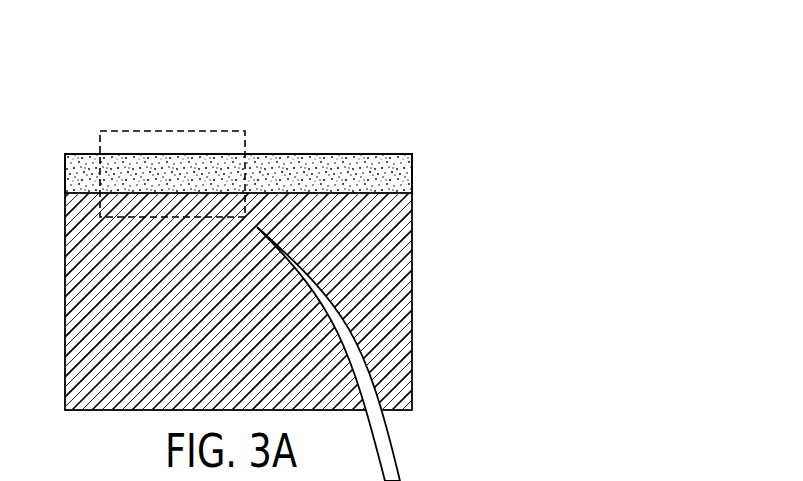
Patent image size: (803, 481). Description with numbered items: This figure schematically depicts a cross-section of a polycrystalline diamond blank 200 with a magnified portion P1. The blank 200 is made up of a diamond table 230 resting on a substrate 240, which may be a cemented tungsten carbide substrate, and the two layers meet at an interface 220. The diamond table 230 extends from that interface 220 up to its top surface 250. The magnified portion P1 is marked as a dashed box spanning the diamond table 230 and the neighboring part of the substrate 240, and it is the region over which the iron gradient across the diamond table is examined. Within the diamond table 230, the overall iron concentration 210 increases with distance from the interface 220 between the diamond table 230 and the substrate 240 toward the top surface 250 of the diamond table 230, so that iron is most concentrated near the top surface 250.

The blank 200 is at (430, 112).
The overall iron concentration 210 is at (425, 354).
The interface 220 is at (293, 192).
The diamond table 230 is at (397, 182).
The substrate 240 is at (395, 306).
The top surface 250 is at (337, 153).
The magnified portion P1 is at (100, 148).